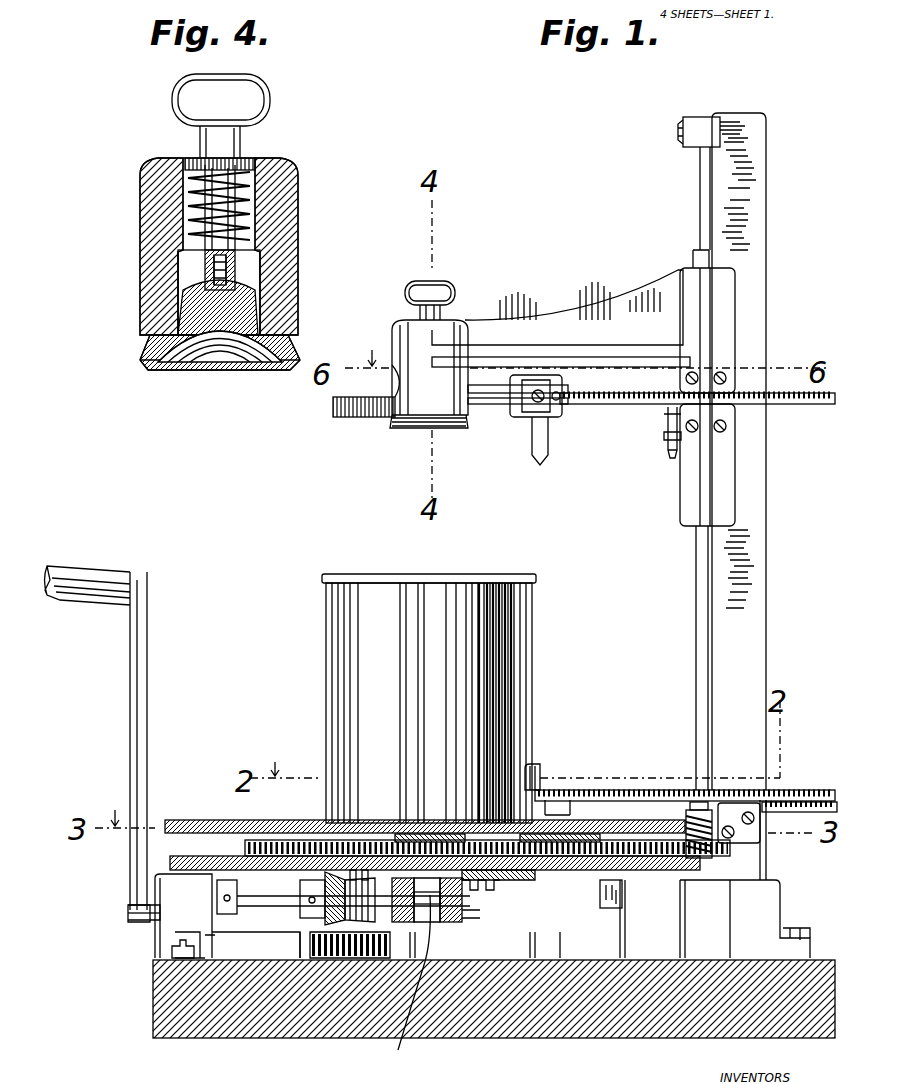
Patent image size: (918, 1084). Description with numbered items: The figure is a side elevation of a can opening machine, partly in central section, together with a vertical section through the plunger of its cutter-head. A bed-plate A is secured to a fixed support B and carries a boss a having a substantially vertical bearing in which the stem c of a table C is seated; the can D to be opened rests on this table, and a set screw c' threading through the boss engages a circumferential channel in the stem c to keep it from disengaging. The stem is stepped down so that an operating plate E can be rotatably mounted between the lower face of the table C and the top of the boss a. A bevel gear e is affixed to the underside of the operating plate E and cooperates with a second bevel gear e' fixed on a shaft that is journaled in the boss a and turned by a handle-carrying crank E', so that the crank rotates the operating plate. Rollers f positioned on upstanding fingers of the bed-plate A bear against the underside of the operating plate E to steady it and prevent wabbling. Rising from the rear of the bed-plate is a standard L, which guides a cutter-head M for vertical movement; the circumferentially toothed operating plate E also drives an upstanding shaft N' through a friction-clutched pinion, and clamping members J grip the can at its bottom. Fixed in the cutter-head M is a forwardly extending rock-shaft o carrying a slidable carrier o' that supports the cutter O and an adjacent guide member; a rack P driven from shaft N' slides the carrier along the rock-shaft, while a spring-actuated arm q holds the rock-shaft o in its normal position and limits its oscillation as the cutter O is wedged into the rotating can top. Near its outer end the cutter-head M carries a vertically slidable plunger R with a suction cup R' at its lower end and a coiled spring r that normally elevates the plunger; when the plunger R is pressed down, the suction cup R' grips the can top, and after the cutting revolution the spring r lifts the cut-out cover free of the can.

In FIG. 4, the cutter-head M is at (140, 238).
In FIG. 1, the cutter-head M is at (538, 385).
In FIG. 4, the plunger R is at (235, 122).
In FIG. 1, the plunger R is at (402, 293).
In FIG. 4, the spring r is at (250, 196).
In FIG. 4, the suction cup R' is at (220, 348).
In FIG. 1, the standard L is at (766, 192).
In FIG. 1, the rock-shaft o is at (516, 424).
In FIG. 1, the cutter O is at (530, 415).
In FIG. 1, the carrier o' is at (546, 373).
In FIG. 1, the rack P is at (806, 405).
In FIG. 1, the spring-actuated arm q is at (664, 436).
In FIG. 1, the upstanding shaft N' is at (685, 703).
In FIG. 1, the clamping members J is at (578, 790).
In FIG. 1, the can D is at (326, 616).
In FIG. 1, the handle-carrying crank E' is at (98, 744).
In FIG. 1, the table C is at (185, 820).
In FIG. 1, the operating plate E is at (381, 881).
In FIG. 1, the bed-plate A is at (165, 925).
In FIG. 1, the second bevel gear e' is at (351, 902).
In FIG. 1, the set screw c' is at (449, 900).
In FIG. 1, the boss a is at (462, 915).
In FIG. 1, the bevel gear e is at (514, 882).
In FIG. 1, the rollers f is at (600, 888).
In FIG. 1, the stem c is at (370, 983).
In FIG. 1, the fixed support B is at (282, 1025).